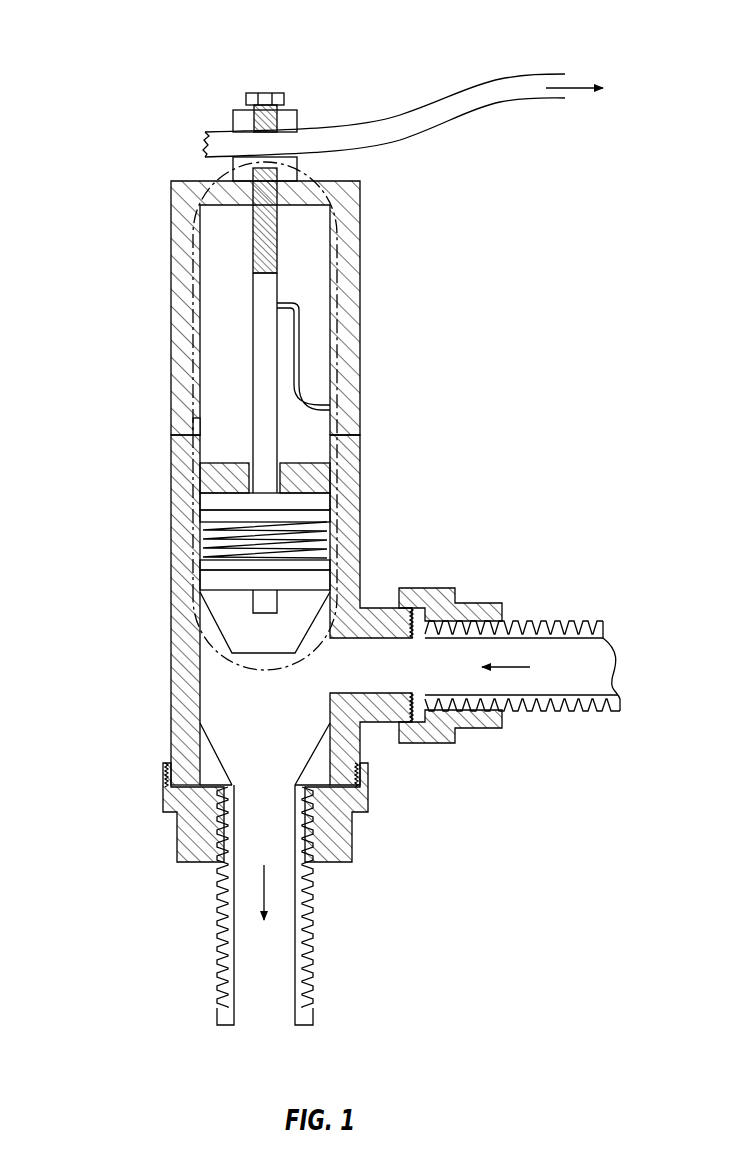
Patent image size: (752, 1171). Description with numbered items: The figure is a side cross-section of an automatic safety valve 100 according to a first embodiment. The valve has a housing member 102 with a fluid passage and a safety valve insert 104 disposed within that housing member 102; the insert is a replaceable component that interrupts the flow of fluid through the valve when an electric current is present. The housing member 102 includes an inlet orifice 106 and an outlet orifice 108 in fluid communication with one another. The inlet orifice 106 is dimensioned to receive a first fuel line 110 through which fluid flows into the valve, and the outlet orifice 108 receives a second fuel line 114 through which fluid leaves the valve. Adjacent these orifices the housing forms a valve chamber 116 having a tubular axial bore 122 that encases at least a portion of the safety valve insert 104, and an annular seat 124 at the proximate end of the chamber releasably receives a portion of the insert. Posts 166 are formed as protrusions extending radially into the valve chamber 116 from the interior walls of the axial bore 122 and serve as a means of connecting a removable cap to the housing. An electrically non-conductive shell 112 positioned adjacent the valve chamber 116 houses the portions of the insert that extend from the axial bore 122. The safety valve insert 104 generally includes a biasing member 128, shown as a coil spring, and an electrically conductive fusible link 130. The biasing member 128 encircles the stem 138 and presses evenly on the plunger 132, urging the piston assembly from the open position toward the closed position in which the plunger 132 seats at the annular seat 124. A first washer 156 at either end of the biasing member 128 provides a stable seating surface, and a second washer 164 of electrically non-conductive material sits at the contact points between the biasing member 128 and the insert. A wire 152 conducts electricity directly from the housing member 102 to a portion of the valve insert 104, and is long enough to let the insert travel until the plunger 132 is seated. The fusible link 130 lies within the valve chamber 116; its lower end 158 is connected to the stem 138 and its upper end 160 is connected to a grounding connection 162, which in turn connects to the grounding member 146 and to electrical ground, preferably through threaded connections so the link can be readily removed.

The automatic safety valve 100 is at (97, 173).
The housing member 102 is at (171, 555).
The safety valve insert 104 is at (190, 390).
The inlet orifice 106 is at (437, 678).
The outlet orifice 108 is at (297, 753).
The first fuel line 110 is at (548, 657).
The electrically non-conductive shell 112 is at (173, 328).
The second fuel line 114 is at (273, 942).
The valve chamber 116 is at (240, 698).
The tubular axial bore 122 is at (320, 333).
The annular seat 124 is at (223, 762).
The biasing member 128 is at (333, 540).
The electrically conductive fusible link 130 is at (266, 255).
The plunger 132 is at (245, 635).
The stem 138 is at (257, 413).
The grounding member 146 is at (378, 123).
The wire 152 is at (302, 377).
The first washer 156 is at (333, 500).
The lower end of fusible link 158 is at (268, 266).
The upper end of fusible link 160 is at (278, 192).
The grounding connection 162 is at (297, 97).
The second washer 164 is at (333, 515).
The posts 166 is at (340, 432).